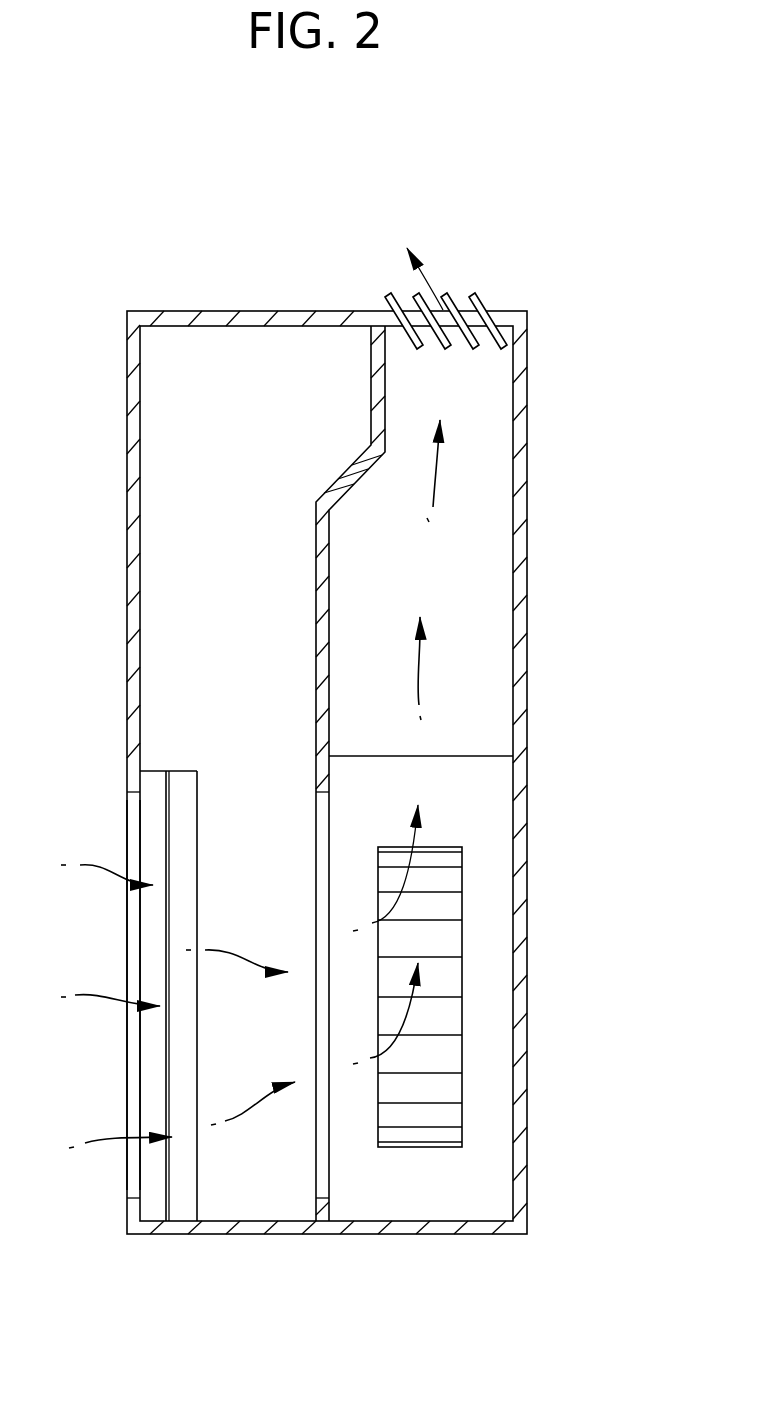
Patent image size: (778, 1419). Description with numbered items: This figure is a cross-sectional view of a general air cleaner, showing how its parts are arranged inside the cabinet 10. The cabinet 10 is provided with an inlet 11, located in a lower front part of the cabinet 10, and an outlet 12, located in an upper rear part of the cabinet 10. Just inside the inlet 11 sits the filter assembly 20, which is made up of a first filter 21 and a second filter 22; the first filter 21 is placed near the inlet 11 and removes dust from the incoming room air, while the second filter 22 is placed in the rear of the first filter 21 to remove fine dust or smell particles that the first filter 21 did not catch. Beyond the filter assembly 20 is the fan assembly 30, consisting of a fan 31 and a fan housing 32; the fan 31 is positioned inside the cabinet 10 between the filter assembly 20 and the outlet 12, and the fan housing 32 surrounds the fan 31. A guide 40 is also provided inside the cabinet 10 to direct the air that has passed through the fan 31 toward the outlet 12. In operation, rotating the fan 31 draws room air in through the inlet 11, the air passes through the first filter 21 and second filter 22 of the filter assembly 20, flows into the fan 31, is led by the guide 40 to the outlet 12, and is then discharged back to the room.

The cabinet 10 is at (515, 511).
The inlet 11 is at (130, 1067).
The outlet 12 is at (465, 303).
The filter assembly 20 is at (200, 1317).
The first filter 21 is at (152, 1205).
The second filter 22 is at (180, 1205).
The fan assembly 30 is at (633, 818).
The fan 31 is at (447, 1017).
The fan housing 32 is at (478, 817).
The guide 40 is at (327, 639).